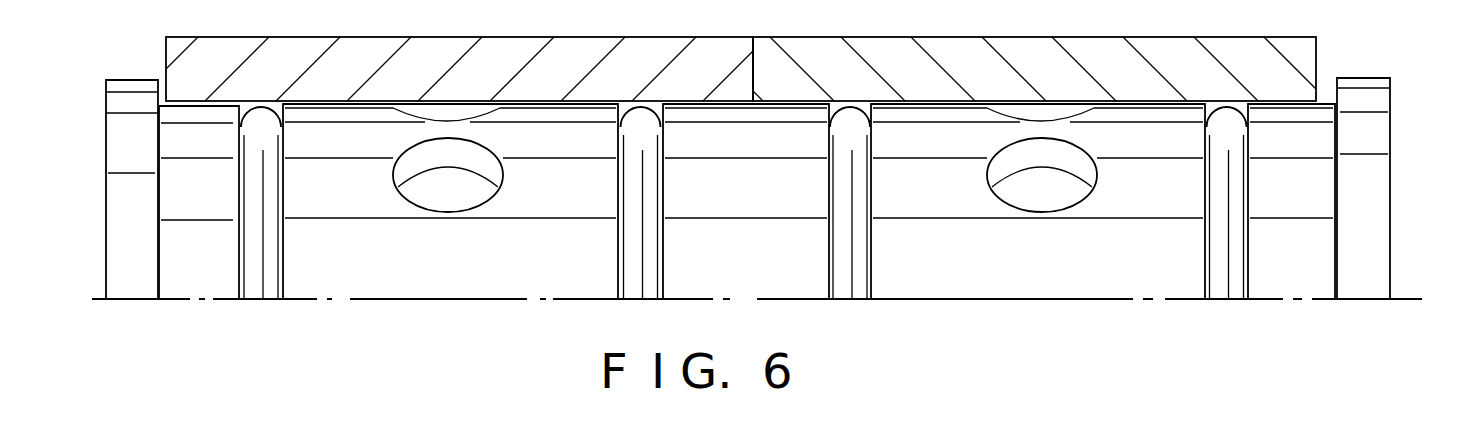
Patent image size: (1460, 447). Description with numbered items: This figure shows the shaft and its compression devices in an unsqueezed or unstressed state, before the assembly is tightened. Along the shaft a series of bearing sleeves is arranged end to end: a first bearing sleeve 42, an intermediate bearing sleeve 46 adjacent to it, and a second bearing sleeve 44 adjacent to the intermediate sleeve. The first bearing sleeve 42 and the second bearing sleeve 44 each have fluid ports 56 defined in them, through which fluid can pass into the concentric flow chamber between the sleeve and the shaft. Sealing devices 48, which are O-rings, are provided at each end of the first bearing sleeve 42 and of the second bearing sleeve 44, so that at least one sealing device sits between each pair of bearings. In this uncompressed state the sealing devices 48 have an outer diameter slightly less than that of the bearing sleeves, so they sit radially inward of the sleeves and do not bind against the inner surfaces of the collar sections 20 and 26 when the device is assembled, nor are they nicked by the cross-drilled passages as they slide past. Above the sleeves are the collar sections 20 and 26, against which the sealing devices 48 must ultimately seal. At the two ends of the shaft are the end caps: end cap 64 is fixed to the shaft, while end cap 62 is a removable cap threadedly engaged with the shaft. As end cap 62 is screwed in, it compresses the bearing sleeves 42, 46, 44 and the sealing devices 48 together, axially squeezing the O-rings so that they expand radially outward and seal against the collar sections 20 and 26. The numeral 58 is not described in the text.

The collar section 20 is at (441, 37).
The collar section 26 is at (981, 35).
The first bearing sleeve 42 is at (525, 299).
The second bearing sleeve 44 is at (1124, 299).
The intermediate bearing sleeve 46 is at (771, 299).
The sealing device 48 is at (272, 268).
The fluid port 56 is at (430, 200).
The pin head 58 is at (239, 125).
The end cap 62 is at (1392, 185).
The end cap 64 is at (106, 182).